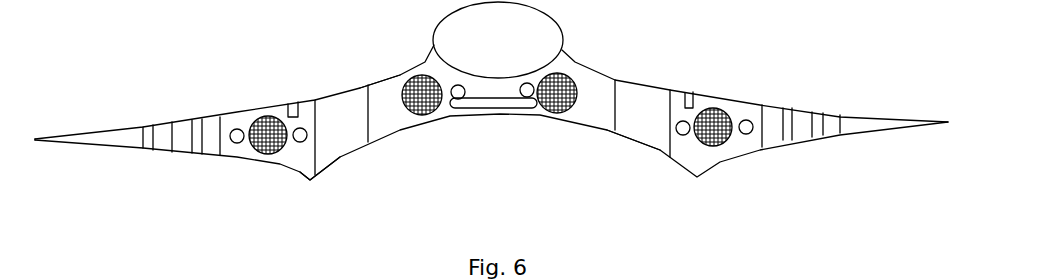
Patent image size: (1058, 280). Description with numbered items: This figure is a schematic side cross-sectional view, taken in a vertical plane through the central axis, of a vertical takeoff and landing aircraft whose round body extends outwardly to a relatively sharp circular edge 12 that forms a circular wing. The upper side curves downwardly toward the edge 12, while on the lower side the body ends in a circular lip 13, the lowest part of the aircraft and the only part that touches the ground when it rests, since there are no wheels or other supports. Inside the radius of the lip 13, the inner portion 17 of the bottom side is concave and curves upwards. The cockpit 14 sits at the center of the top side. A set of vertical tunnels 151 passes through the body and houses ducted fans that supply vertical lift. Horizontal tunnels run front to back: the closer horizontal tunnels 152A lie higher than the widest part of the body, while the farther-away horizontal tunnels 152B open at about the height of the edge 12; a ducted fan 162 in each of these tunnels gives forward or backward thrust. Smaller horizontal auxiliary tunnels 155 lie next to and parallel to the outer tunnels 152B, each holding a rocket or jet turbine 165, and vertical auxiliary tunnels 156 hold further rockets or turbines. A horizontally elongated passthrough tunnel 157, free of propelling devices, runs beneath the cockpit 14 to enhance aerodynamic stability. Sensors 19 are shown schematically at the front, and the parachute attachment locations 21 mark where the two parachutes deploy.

The circular edge 12 is at (35, 140).
The circular lip 13 is at (310, 182).
The cockpit 14 is at (532, 55).
The inner portion of the bottom side 17 is at (638, 142).
The sensors 19 is at (453, 87).
The parachute attachment locations 21 is at (293, 104).
The first set of vertical tunnels 151 is at (365, 88).
The closer horizontal tunnels 152A is at (426, 120).
The farther-away horizontal tunnels 152B is at (262, 155).
The horizontal auxiliary tunnels 155 is at (237, 128).
The vertical auxiliary tunnels 156 is at (183, 115).
The passthrough tunnel 157 is at (507, 108).
The ducted fan 162 is at (258, 147).
The rocket or jet turbine 165 is at (292, 128).